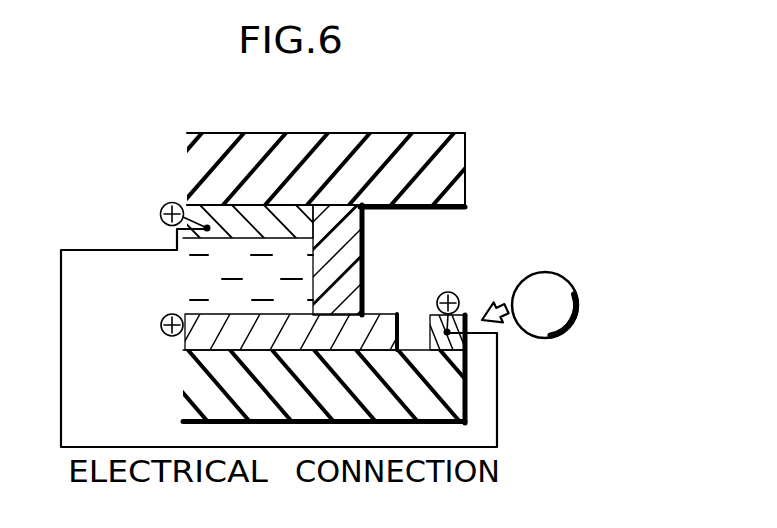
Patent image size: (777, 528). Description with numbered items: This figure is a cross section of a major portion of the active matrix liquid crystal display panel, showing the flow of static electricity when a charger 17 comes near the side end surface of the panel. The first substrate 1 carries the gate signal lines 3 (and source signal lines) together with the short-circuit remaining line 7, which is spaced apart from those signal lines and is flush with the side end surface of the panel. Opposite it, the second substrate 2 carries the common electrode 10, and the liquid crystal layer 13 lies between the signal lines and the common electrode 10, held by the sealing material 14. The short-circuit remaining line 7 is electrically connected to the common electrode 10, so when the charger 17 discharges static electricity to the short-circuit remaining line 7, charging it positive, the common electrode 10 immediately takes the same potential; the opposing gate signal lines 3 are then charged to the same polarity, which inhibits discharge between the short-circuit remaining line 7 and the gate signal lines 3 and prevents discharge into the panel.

The first substrate 1 is at (205, 388).
The second substrate 2 is at (207, 162).
The gate signal lines 3 is at (205, 338).
The short-circuit remaining line 7 is at (432, 315).
The common electrode 10 is at (195, 205).
The liquid crystal layer 13 is at (207, 268).
The sealing material 14 is at (338, 260).
The charger 17 is at (574, 284).